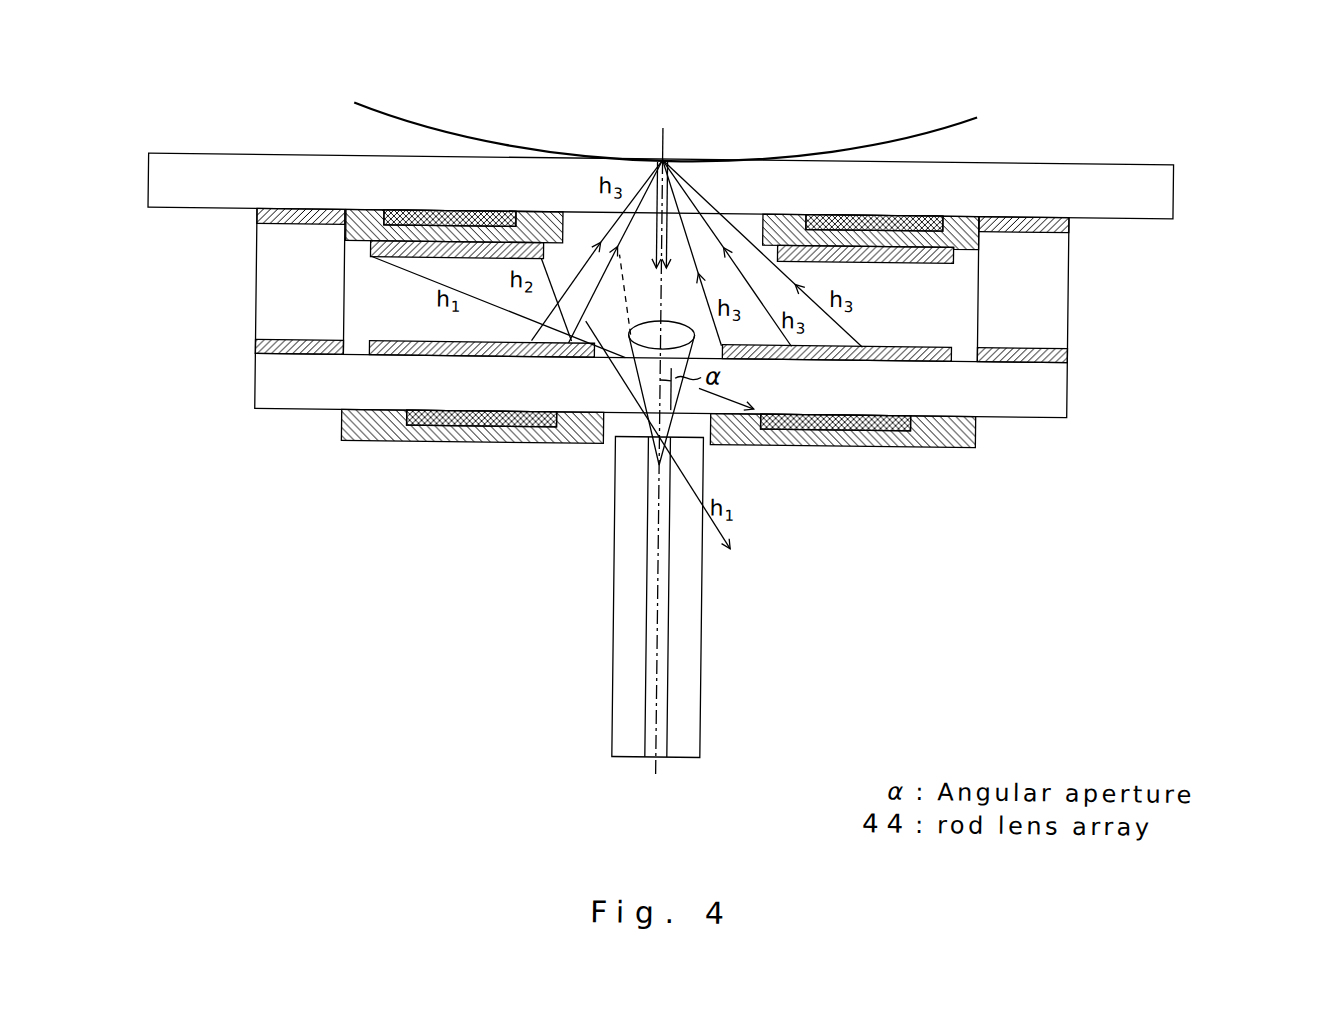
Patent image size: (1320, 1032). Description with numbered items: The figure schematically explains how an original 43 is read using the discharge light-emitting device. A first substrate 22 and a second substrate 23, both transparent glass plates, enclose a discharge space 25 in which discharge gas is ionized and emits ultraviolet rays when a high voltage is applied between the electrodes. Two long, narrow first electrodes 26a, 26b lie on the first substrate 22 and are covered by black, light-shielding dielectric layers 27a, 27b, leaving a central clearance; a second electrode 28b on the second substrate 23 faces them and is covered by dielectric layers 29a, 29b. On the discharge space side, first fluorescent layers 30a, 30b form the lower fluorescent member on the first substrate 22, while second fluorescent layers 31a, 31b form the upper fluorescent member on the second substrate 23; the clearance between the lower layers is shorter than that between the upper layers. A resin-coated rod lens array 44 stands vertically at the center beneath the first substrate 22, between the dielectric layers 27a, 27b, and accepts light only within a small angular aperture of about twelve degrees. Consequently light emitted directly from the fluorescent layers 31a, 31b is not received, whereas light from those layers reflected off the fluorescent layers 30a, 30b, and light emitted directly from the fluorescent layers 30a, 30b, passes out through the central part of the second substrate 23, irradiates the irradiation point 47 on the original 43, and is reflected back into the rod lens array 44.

The first substrate 22 is at (1055, 383).
The second substrate 23 is at (1160, 181).
The discharge space 25 is at (365, 323).
The first electrode 26a is at (456, 446).
The first electrode 26b is at (905, 446).
The dielectric layer 27a is at (356, 446).
The dielectric layer 27b is at (835, 446).
The second electrode 28b is at (420, 216).
The dielectric layer 29a is at (345, 237).
The dielectric layer 29b is at (955, 210).
The first fluorescent layer 30a is at (375, 361).
The first fluorescent layer 30b is at (947, 357).
The second fluorescent layer 31a is at (372, 253).
The second fluorescent layer 31b is at (973, 211).
The original 43 is at (415, 129).
The rod lens array 44 is at (694, 640).
The irradiation point 47 is at (668, 152).